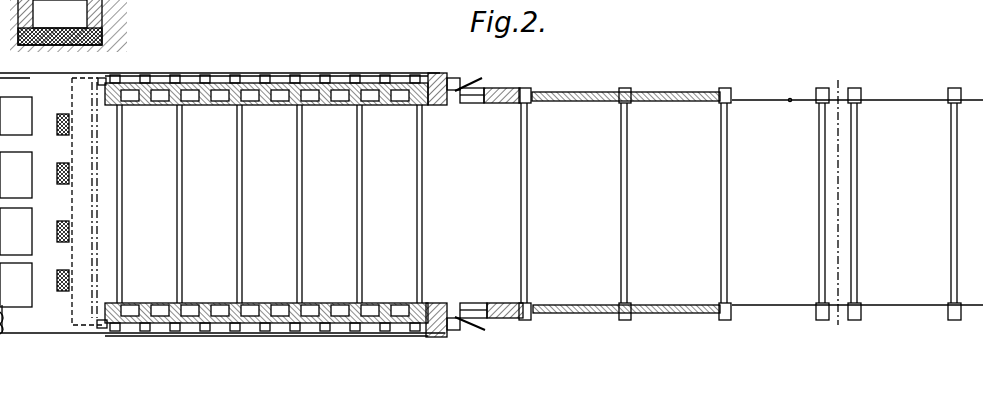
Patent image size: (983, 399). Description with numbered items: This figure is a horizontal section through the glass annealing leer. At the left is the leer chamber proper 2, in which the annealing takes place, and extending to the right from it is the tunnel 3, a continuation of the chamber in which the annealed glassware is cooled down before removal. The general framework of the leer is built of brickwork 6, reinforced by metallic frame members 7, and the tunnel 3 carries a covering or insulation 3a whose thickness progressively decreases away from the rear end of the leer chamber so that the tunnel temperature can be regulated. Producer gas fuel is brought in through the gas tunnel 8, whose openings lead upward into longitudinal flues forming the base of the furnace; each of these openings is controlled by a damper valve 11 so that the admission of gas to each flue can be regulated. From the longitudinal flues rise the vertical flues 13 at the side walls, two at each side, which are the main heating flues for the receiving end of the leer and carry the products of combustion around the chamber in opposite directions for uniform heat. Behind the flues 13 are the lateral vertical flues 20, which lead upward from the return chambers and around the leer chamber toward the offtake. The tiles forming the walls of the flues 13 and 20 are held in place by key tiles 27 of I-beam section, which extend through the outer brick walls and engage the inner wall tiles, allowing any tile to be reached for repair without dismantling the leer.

The leer chamber proper 2 is at (269, 204).
The tunnel continuation 3 is at (733, 194).
The covering or insulation 3a is at (503, 92).
The brickwork 6 is at (272, 93).
The metallic frame members 7 is at (255, 75).
The tunnel 8 is at (68, 26).
The damper valve 11 is at (62, 135).
The vertical flue 13 is at (160, 104).
The lateral vertical flue 20 is at (282, 102).
The key tile 27 is at (238, 303).